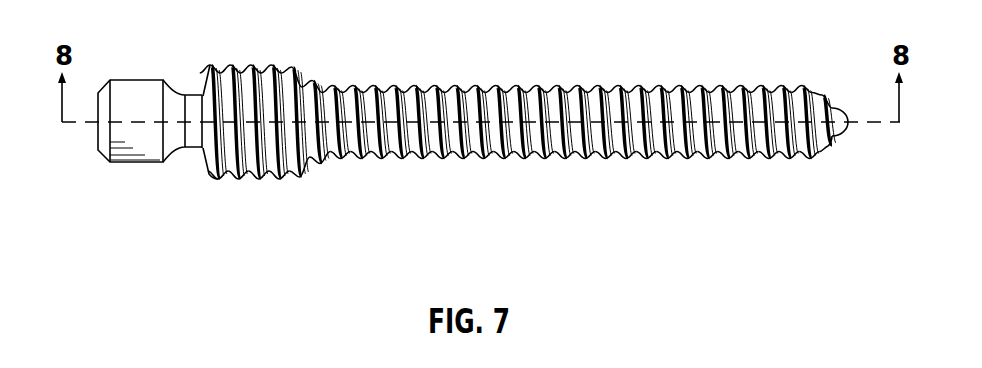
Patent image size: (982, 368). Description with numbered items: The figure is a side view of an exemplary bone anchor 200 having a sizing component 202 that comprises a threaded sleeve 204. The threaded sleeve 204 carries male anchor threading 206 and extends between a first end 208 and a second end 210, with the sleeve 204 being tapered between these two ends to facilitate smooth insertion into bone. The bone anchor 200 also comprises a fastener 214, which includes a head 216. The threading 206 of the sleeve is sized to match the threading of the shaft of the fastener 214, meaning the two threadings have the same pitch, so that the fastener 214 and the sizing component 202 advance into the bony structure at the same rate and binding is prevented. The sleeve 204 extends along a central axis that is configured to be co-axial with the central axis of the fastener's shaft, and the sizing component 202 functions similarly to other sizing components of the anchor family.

The bone anchor 200 is at (690, 31).
The sizing component 202 is at (265, 126).
The threaded sleeve 204 is at (240, 65).
The male anchor threading 206 is at (270, 66).
The first end 208 is at (202, 168).
The second end 210 is at (333, 90).
The fastener 214 is at (790, 80).
The head 216 is at (137, 79).